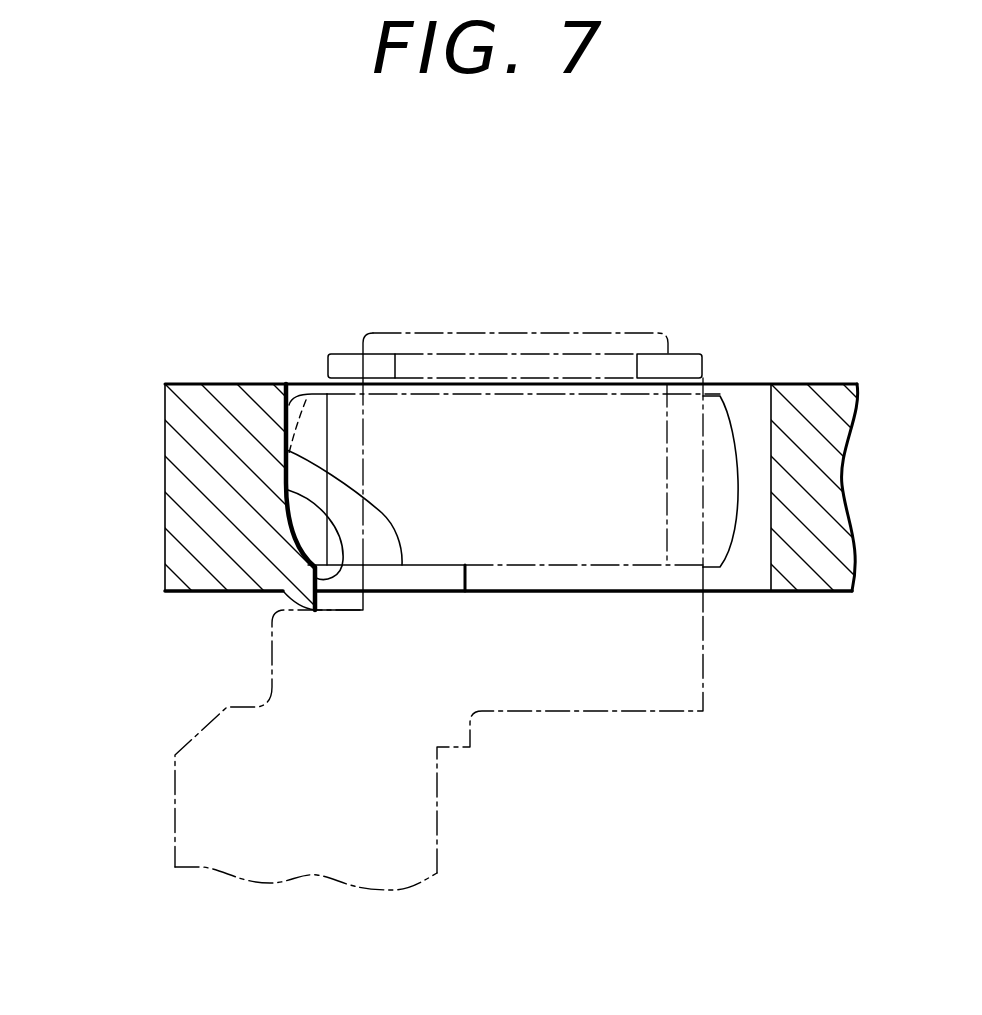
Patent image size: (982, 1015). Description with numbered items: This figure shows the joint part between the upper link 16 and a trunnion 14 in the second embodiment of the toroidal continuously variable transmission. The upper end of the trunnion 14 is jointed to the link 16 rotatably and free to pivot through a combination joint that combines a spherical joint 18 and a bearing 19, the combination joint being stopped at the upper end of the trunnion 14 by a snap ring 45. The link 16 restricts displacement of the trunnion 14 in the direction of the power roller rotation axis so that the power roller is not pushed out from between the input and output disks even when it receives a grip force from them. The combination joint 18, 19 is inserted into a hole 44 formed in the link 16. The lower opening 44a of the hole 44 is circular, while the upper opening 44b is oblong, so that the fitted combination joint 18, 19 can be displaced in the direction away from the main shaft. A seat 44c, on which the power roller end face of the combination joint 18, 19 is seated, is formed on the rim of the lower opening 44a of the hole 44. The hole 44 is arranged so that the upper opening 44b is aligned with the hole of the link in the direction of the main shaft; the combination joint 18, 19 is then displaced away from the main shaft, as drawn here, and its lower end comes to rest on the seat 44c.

The trunnion 14 is at (175, 817).
The link 16 is at (187, 555).
The spherical joint 18 is at (725, 445).
The bearing 19 is at (683, 428).
The hole 44 is at (410, 260).
The lower opening 44a is at (285, 493).
The upper opening 44b is at (294, 392).
The seat 44c is at (287, 450).
The snap ring 45 is at (690, 352).